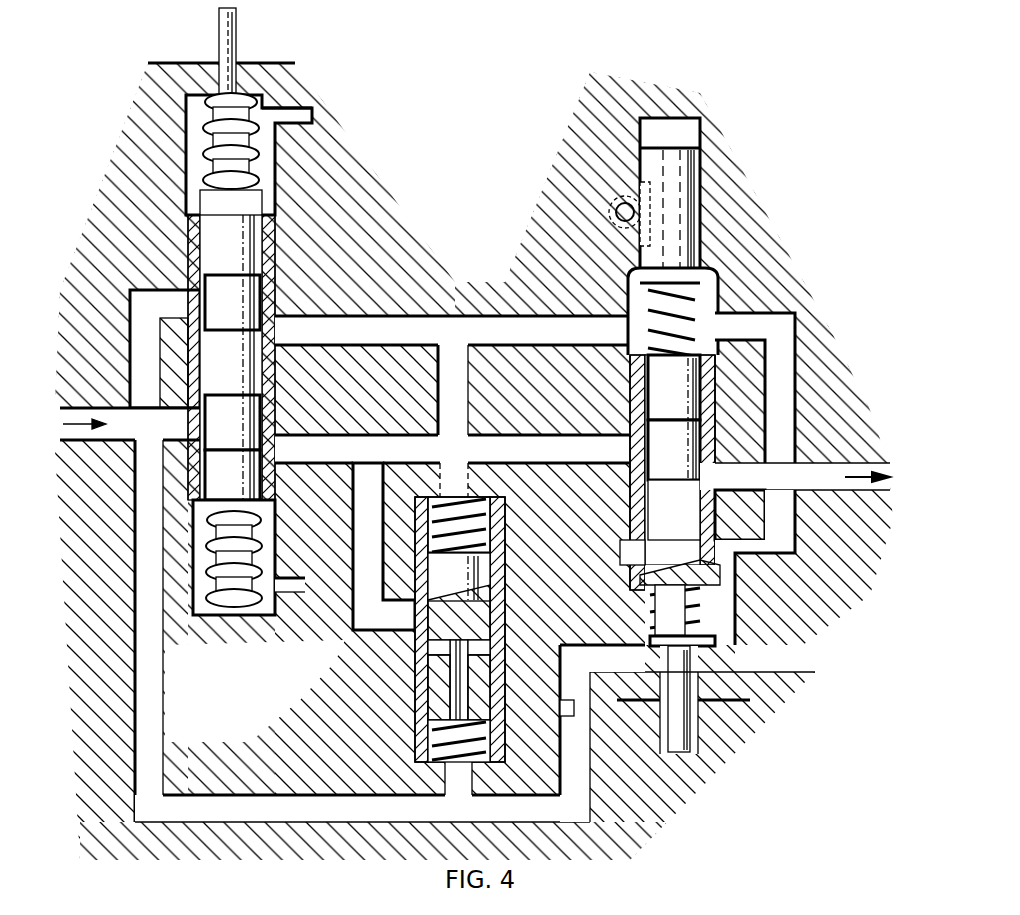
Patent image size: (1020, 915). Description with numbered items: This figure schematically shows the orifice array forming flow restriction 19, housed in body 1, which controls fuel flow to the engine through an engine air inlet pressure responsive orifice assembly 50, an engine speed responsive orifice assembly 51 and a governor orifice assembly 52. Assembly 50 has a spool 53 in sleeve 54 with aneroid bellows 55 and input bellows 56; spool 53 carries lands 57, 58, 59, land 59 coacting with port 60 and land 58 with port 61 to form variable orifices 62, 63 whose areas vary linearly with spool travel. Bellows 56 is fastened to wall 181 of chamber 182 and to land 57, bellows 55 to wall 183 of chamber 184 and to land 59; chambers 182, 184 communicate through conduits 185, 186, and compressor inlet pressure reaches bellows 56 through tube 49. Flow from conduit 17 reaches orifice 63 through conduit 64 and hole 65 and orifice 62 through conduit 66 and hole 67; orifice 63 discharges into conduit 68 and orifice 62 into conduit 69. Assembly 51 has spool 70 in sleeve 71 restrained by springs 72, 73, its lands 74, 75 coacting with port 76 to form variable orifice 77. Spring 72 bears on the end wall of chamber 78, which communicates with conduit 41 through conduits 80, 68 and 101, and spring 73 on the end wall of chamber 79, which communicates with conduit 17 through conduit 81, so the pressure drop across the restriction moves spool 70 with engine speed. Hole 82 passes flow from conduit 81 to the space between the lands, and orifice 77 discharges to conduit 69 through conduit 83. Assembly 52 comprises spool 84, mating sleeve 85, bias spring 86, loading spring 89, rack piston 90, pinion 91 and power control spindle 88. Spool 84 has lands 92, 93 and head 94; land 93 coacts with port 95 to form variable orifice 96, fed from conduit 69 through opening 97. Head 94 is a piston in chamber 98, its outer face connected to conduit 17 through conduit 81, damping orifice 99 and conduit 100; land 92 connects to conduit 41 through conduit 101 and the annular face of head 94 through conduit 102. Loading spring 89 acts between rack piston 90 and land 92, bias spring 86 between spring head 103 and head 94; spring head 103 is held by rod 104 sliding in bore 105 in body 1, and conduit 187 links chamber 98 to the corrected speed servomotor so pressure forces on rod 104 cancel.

The body 1 is at (262, 63).
The conduit 17 is at (95, 415).
The flow restriction 19 is at (100, 480).
The conduit 41 is at (842, 488).
The tube 49 is at (236, 32).
The engine air inlet pressure responsive orifice assembly 50 is at (180, 262).
The engine speed responsive orifice assembly 51 is at (390, 665).
The governor orifice assembly 52 is at (610, 408).
The spool 53 is at (282, 196).
The sleeve 54 is at (278, 232).
The aneroid bellows 55 is at (190, 548).
The input bellows 56 is at (205, 165).
The land 57 is at (200, 205).
The land 58 is at (165, 360).
The land 59 is at (270, 492).
The port 60 is at (270, 470).
The port 61 is at (278, 345).
The variable orifice 62 is at (282, 454).
The variable orifice 63 is at (282, 334).
The conduit 64 is at (145, 330).
The hole 65 is at (175, 285).
The conduit 66 is at (165, 395).
The hole 67 is at (135, 440).
The conduit 68 is at (525, 325).
The conduit 69 is at (495, 448).
The spool 70 is at (490, 553).
The sleeve 71 is at (415, 497).
The spring 72 is at (492, 530).
The spring 73 is at (482, 748).
The land 74 is at (465, 580).
The land 75 is at (482, 668).
The port 76 is at (306, 580).
The variable orifice 77 is at (405, 612).
The chamber 78 is at (470, 495).
The chamber 79 is at (415, 735).
The conduit 80 is at (462, 392).
The conduit 81 is at (153, 768).
The hole 82 is at (482, 702).
The conduit 83 is at (353, 520).
The spool 84 is at (705, 340).
The mating sleeve 85 is at (705, 382).
The bias spring 86 is at (720, 640).
The power control spindle 88 is at (612, 200).
The loading spring 89 is at (708, 290).
The rack piston 90 is at (640, 172).
The pinion 91 is at (612, 225).
The land 92 is at (630, 373).
The land 93 is at (645, 525).
The head 94 is at (722, 580).
The port 95 is at (720, 515).
The variable orifice 96 is at (725, 484).
The opening 97 is at (630, 490).
The chamber 98 is at (730, 612).
The damping orifice 99 is at (592, 732).
The conduit 100 is at (600, 650).
The conduit 101 is at (790, 406).
The conduit 102 is at (790, 548).
The spring head 103 is at (715, 705).
The rod 104 is at (690, 745).
The bore 105 is at (662, 705).
The wall 181 is at (186, 105).
The chamber 182 is at (270, 145).
The wall 183 is at (200, 598).
The chamber 184 is at (205, 565).
The conduit 185 is at (282, 115).
The conduit 186 is at (298, 610).
The conduit 187 is at (775, 685).